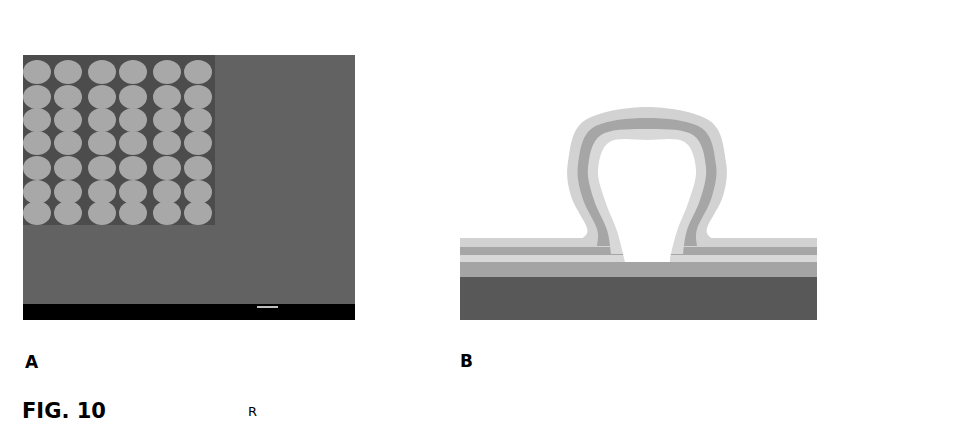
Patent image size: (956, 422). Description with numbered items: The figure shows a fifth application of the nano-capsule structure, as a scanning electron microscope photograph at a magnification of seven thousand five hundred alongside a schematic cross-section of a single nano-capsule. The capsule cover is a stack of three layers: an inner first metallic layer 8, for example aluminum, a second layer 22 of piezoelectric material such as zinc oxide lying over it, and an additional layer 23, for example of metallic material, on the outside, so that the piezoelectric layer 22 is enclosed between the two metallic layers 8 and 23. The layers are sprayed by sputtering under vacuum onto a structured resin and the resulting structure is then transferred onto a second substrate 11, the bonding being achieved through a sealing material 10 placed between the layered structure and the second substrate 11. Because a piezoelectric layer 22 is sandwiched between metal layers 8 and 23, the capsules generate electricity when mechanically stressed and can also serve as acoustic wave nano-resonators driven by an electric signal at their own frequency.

The second layer of piezoelectric material 22 is at (707, 152).
The additional layer 23 is at (727, 175).
The first metallic layer 8 is at (682, 220).
The sealing material 10 is at (742, 270).
The second substrate 11 is at (677, 302).